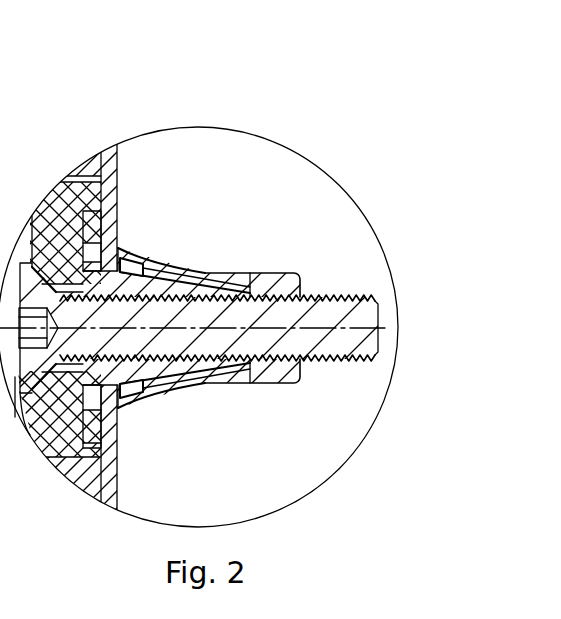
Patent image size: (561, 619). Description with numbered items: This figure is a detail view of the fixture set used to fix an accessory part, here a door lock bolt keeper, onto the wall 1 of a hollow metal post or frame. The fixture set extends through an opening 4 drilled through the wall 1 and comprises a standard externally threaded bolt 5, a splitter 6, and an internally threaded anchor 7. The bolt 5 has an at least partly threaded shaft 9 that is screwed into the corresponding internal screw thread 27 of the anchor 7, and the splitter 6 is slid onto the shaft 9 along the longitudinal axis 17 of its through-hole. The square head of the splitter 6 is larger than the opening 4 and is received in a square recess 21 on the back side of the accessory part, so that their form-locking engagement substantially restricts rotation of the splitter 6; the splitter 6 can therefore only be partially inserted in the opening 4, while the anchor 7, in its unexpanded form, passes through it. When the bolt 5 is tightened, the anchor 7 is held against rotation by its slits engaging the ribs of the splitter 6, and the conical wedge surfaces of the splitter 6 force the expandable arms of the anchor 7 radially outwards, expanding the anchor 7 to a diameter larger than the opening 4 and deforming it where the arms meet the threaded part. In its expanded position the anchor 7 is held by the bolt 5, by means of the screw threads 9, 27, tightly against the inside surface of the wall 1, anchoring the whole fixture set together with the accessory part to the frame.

The wall 1 is at (105, 153).
The opening 4 is at (113, 262).
The bolt 5 is at (343, 327).
The splitter 6 is at (178, 258).
The anchor 7 is at (282, 276).
The threaded shaft 9 is at (208, 273).
The longitudinal axis 17 is at (408, 328).
The square recess 21 is at (82, 217).
The internal screw thread 27 is at (268, 358).